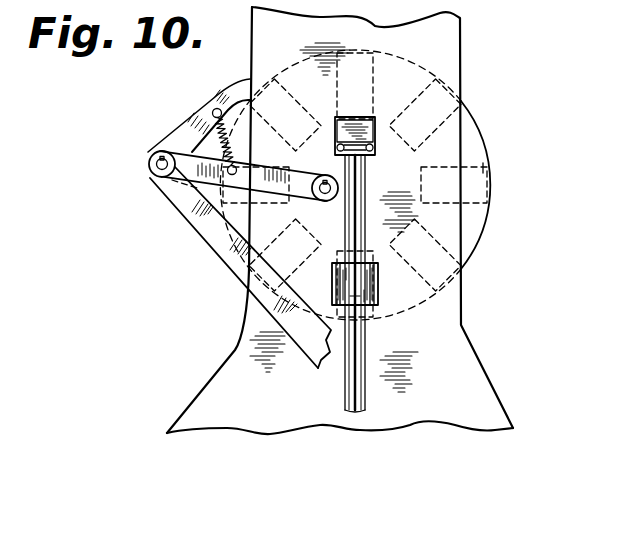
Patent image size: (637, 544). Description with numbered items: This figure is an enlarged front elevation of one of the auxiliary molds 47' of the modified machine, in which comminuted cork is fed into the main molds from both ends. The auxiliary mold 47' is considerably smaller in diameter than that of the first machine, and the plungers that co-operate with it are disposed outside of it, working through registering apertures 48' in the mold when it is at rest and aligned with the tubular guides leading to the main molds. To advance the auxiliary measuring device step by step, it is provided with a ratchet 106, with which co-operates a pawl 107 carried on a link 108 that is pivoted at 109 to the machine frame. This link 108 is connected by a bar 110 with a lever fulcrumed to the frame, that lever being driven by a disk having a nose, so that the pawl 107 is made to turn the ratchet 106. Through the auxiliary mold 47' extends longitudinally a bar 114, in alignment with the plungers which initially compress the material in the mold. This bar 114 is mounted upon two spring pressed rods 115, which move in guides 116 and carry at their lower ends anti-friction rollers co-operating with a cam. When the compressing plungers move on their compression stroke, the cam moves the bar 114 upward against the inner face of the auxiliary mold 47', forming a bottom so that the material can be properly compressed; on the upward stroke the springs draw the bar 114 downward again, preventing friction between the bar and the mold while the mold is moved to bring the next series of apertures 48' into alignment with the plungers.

The auxiliary mold 47' is at (362, 185).
The registering apertures 48' is at (476, 180).
The ratchet 106 is at (285, 102).
The pawl 107 is at (197, 128).
The link 108 is at (256, 166).
The pivot 109 is at (322, 201).
The bar 110 is at (213, 239).
The bar 114 is at (342, 132).
The spring pressed rods 115 is at (350, 385).
The guides 116 is at (333, 276).